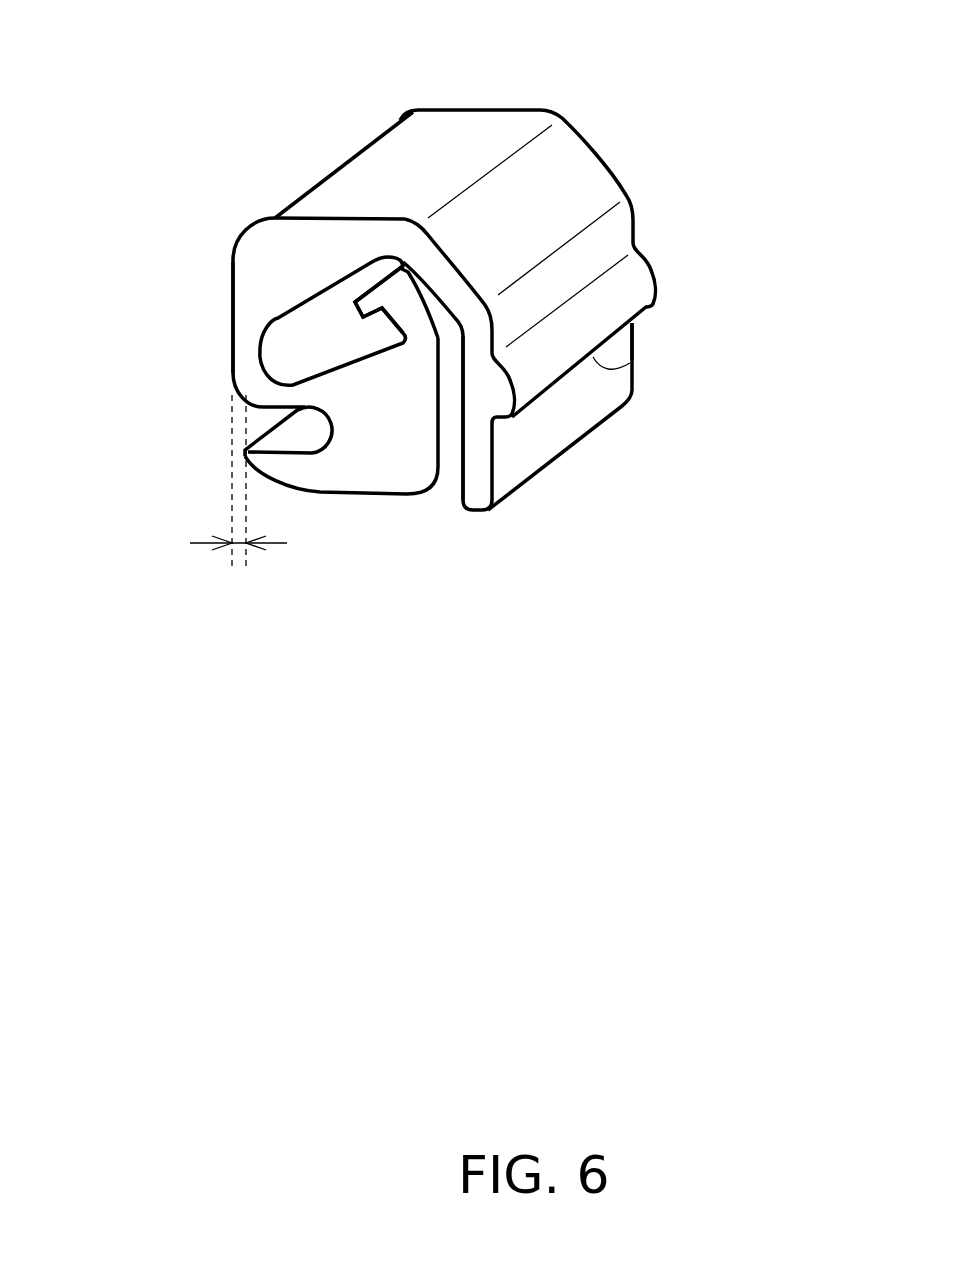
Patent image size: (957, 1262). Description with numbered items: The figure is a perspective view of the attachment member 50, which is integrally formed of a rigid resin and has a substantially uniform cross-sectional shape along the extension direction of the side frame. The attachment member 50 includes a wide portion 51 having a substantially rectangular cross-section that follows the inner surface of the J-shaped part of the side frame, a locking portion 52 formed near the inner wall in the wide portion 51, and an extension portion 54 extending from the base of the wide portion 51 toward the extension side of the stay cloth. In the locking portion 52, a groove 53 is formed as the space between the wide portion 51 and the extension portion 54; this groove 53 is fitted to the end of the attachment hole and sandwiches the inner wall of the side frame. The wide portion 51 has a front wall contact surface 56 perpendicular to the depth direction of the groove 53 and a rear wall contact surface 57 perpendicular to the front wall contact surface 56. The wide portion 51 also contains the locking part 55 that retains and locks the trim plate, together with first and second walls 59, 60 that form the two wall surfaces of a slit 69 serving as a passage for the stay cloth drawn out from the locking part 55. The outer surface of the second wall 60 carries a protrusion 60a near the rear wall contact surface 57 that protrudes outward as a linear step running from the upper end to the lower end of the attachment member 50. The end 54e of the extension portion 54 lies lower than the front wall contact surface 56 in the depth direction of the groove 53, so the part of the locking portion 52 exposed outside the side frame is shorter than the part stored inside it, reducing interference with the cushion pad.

The attachment member 50 is at (630, 133).
The wide portion 51 is at (250, 266).
The locking portion 52 is at (423, 427).
The groove 53 is at (273, 450).
The extension portion 54 is at (315, 475).
The end of the extension portion 54e is at (275, 428).
The locking part 55 is at (262, 358).
The front wall contact surface 56 is at (235, 378).
The rear wall contact surface 57 is at (470, 143).
The first wall 59 is at (397, 303).
The second wall 60 is at (577, 408).
The protrusion 60a is at (633, 362).
The slit 69 is at (452, 413).